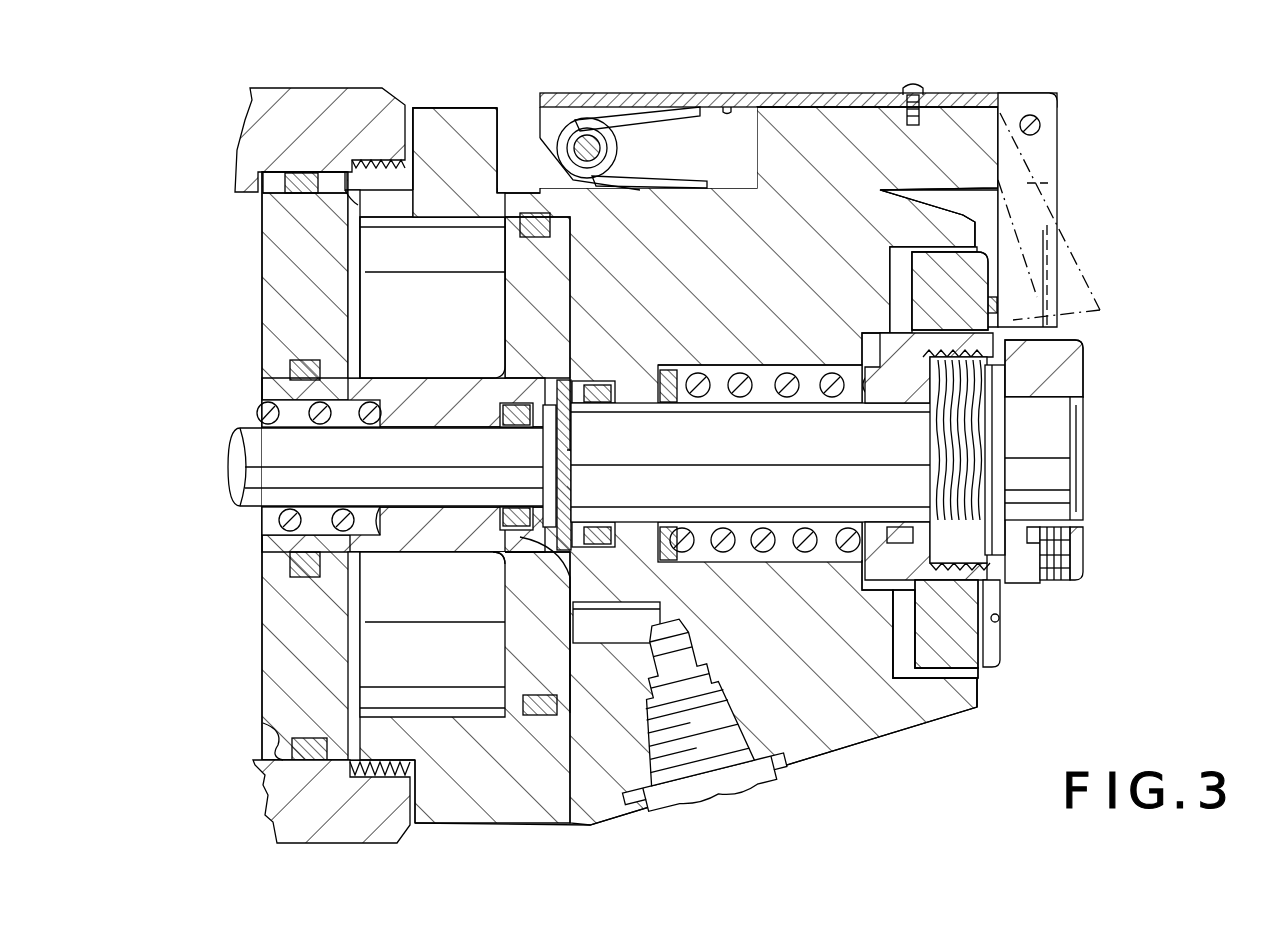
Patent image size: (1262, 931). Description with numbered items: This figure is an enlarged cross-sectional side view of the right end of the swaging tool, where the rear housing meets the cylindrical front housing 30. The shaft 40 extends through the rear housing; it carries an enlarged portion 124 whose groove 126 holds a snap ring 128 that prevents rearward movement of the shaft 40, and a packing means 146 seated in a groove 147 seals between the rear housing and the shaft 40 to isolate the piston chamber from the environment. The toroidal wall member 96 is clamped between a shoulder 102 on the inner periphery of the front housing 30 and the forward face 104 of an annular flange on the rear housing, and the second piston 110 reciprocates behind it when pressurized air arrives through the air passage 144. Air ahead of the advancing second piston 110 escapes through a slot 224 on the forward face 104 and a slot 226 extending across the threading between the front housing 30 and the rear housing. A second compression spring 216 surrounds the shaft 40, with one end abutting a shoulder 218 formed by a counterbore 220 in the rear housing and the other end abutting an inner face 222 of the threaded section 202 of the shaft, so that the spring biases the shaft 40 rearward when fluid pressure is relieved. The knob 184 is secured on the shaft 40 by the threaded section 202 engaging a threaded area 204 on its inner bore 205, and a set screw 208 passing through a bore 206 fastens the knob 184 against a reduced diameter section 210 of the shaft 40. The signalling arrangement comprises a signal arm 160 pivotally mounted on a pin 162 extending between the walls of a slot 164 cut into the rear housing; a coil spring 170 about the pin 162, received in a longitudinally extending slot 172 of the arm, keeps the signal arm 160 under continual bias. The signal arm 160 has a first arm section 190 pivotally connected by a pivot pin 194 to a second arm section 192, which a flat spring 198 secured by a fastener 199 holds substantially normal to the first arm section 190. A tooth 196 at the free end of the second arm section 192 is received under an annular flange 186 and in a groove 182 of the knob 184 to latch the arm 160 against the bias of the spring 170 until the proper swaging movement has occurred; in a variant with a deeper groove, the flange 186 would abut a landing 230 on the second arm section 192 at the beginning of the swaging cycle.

The front housing 30 is at (238, 768).
The shaft 40 is at (218, 465).
The toroidal wall member 96 is at (283, 603).
The shoulder 102 is at (263, 720).
The forward face 104 is at (355, 700).
The second piston 110 is at (496, 284).
The enlarged portion 124 is at (547, 446).
The groove 126 is at (572, 452).
The snap ring 128 is at (505, 566).
The air passage 144 is at (633, 650).
The packing means 146 is at (600, 405).
The groove 147 is at (625, 524).
The signal arm 160 is at (802, 86).
The pin 162 is at (592, 117).
The slot 164 is at (510, 108).
The coil spring 170 is at (611, 148).
The longitudinally extending slot 172 is at (727, 105).
The groove 182 is at (1000, 592).
The knob 184 is at (1000, 684).
The annular flange 186 is at (1000, 620).
The first arm section 190 is at (774, 190).
The second arm section 192 is at (1035, 218).
The pivot pin 194 is at (1041, 123).
The tooth 196 is at (898, 301).
The flat spring 198 is at (1002, 100).
The fastener 199 is at (918, 86).
The threaded section 202 is at (880, 445).
The threaded area 204 is at (905, 598).
The inner bore 205 is at (803, 566).
The bore 206 is at (1066, 541).
The set screw 208 is at (1090, 568).
The reduced diameter section 210 is at (1052, 440).
The second compression spring 216 is at (741, 362).
The shoulder 218 is at (687, 362).
The counterbore 220 is at (705, 562).
The inner face 222 is at (952, 436).
The slot 224 is at (352, 190).
The slot 226 is at (362, 158).
The landing 230 is at (996, 270).